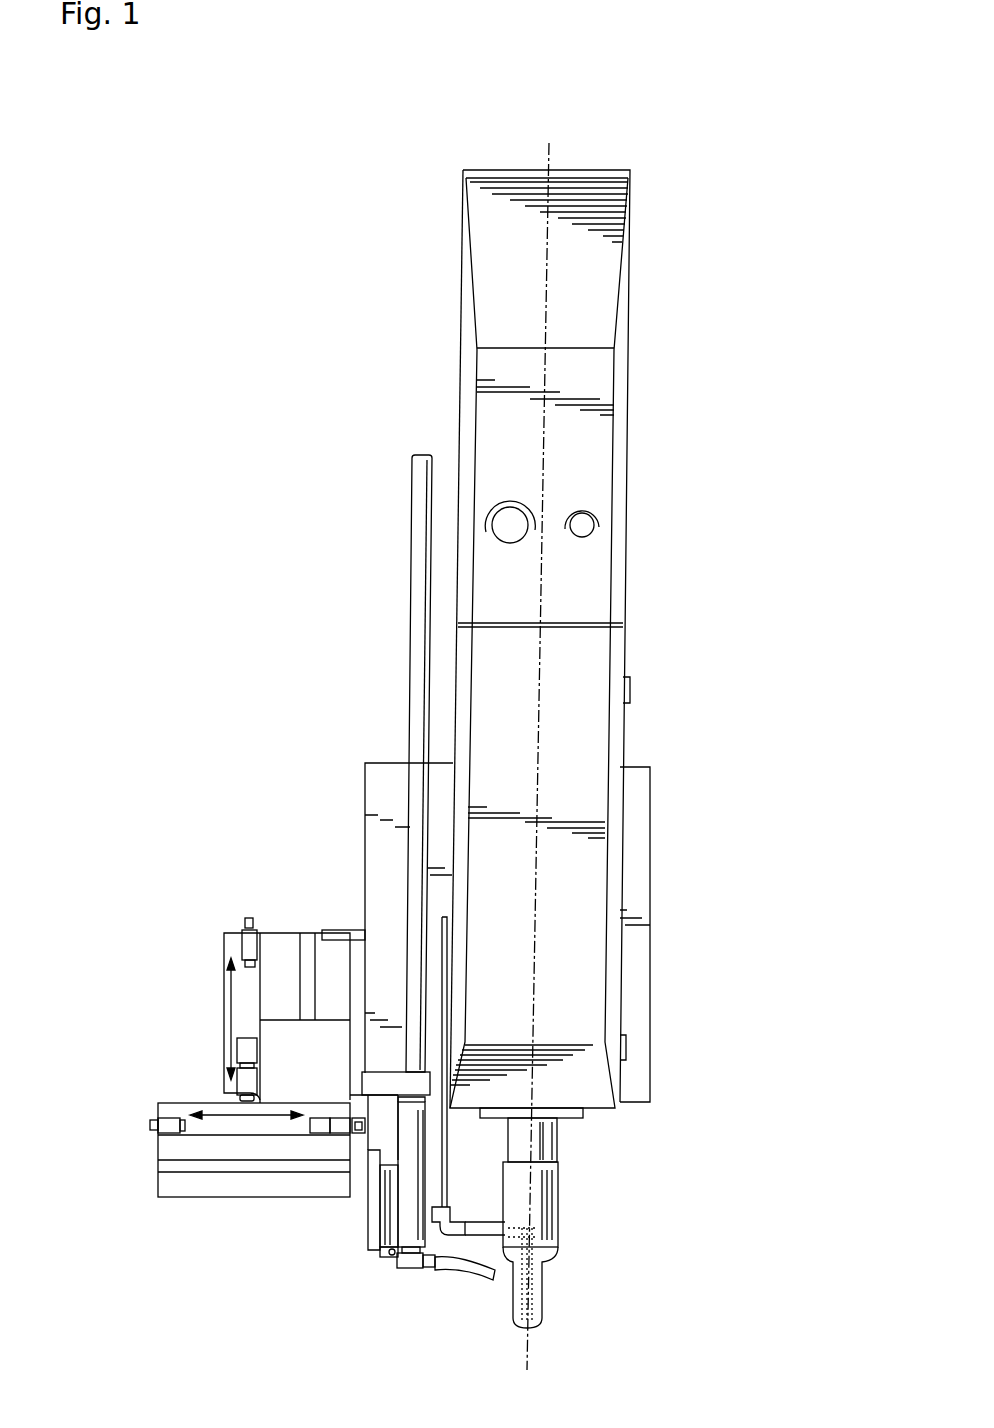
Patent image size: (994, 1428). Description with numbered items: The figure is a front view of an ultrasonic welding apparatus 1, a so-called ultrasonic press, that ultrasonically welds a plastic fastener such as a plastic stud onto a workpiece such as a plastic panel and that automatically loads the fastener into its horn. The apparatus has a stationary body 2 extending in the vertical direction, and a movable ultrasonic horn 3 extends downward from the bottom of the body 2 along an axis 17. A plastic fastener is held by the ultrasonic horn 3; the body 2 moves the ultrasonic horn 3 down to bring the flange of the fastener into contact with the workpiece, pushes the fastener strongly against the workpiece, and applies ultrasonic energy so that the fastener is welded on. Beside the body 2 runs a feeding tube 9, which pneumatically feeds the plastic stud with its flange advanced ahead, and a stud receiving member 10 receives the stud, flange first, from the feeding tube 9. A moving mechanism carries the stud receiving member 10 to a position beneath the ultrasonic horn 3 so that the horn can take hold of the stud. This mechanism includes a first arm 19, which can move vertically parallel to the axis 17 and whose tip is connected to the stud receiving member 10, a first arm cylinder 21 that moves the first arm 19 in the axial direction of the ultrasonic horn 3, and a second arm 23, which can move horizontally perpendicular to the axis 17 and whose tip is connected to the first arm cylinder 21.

The ultrasonic welding apparatus 1 is at (690, 301).
The stationary body 2 is at (578, 468).
The ultrasonic horn 3 is at (540, 1200).
The feeding tube 9 is at (418, 575).
The stud receiving member 10 is at (408, 1270).
The axis 17 is at (552, 727).
The first arm 19 is at (377, 1257).
The first arm cylinder 21 is at (370, 1222).
The second arm 23 is at (368, 1152).